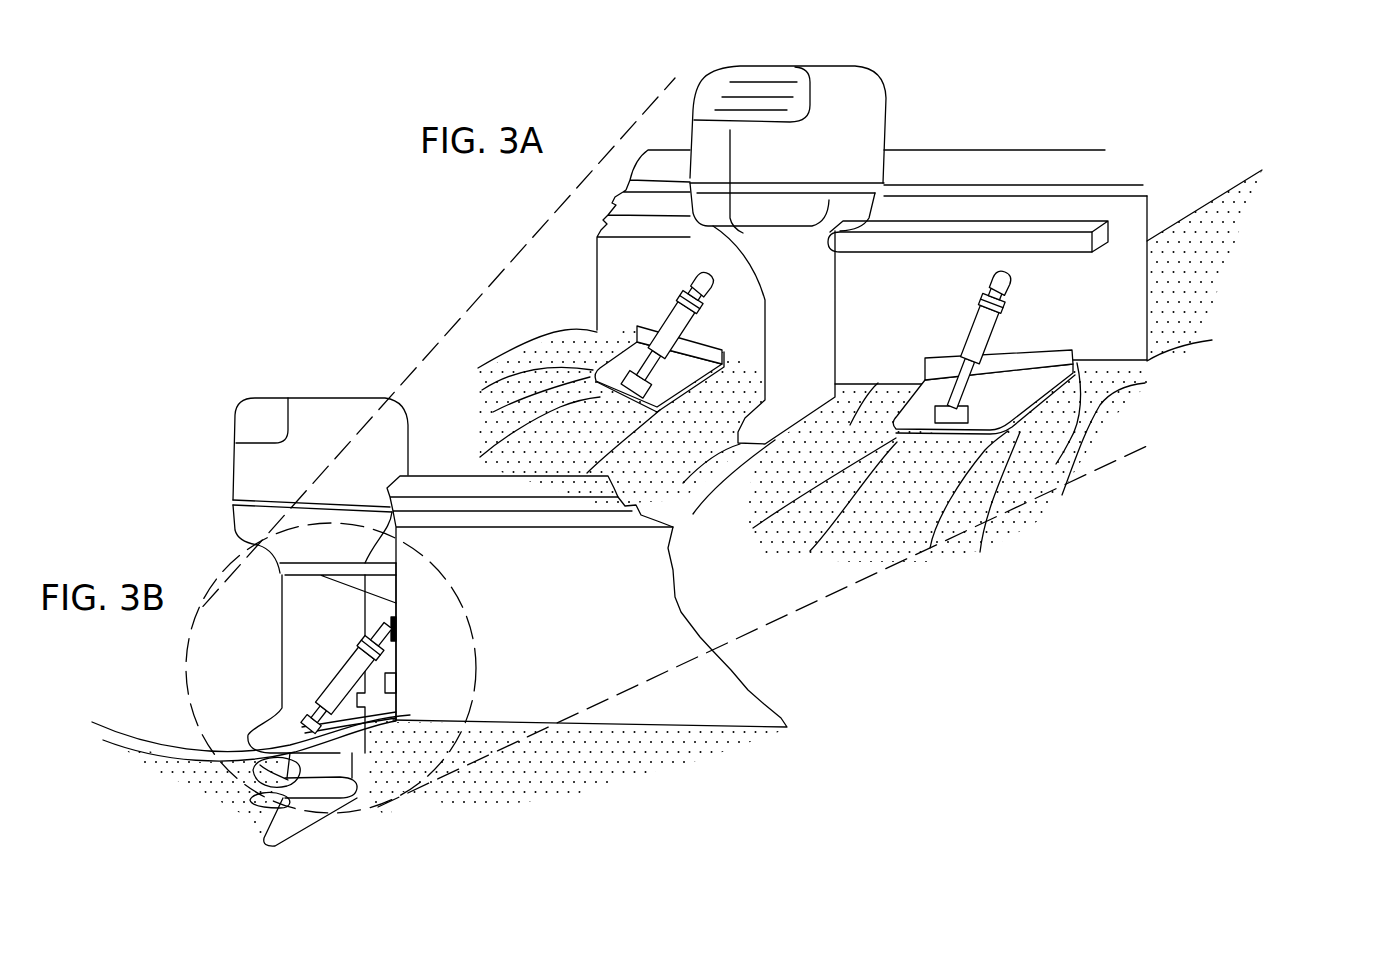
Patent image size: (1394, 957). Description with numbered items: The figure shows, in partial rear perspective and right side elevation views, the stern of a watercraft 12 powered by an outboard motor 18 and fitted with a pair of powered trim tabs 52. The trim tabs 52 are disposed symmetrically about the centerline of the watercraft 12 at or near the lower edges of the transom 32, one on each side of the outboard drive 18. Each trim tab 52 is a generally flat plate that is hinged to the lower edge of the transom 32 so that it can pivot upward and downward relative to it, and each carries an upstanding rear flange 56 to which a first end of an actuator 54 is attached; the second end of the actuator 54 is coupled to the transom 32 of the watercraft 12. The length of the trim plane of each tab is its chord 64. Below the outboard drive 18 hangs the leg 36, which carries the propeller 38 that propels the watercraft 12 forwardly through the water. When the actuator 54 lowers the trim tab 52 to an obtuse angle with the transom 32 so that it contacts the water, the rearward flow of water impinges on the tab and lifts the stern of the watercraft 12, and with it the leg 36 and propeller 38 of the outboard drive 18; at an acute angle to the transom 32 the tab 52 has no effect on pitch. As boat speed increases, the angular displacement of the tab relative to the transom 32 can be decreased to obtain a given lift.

In FIG. 3A, the watercraft 12 is at (982, 165).
In FIG. 3B, the watercraft 12 is at (618, 725).
In FIG. 3A, the outboard motor 18 is at (845, 82).
In FIG. 3B, the outboard motor 18 is at (328, 397).
In FIG. 3A, the transom 32 is at (1147, 263).
In FIG. 3B, the transom 32 is at (396, 607).
In FIG. 3A, the leg 36 is at (740, 405).
In FIG. 3B, the leg 36 is at (298, 680).
In FIG. 3B, the propeller 38 is at (260, 808).
In FIG. 3A, the trim tab 52 is at (987, 403).
In FIG. 3B, the trim tab 52 is at (347, 727).
In FIG. 3A, the actuator 54 is at (672, 330).
In FIG. 3B, the actuator 54 is at (358, 672).
In FIG. 3A, the rear flange 56 is at (1028, 377).
In FIG. 3B, the chord 64 is at (391, 690).